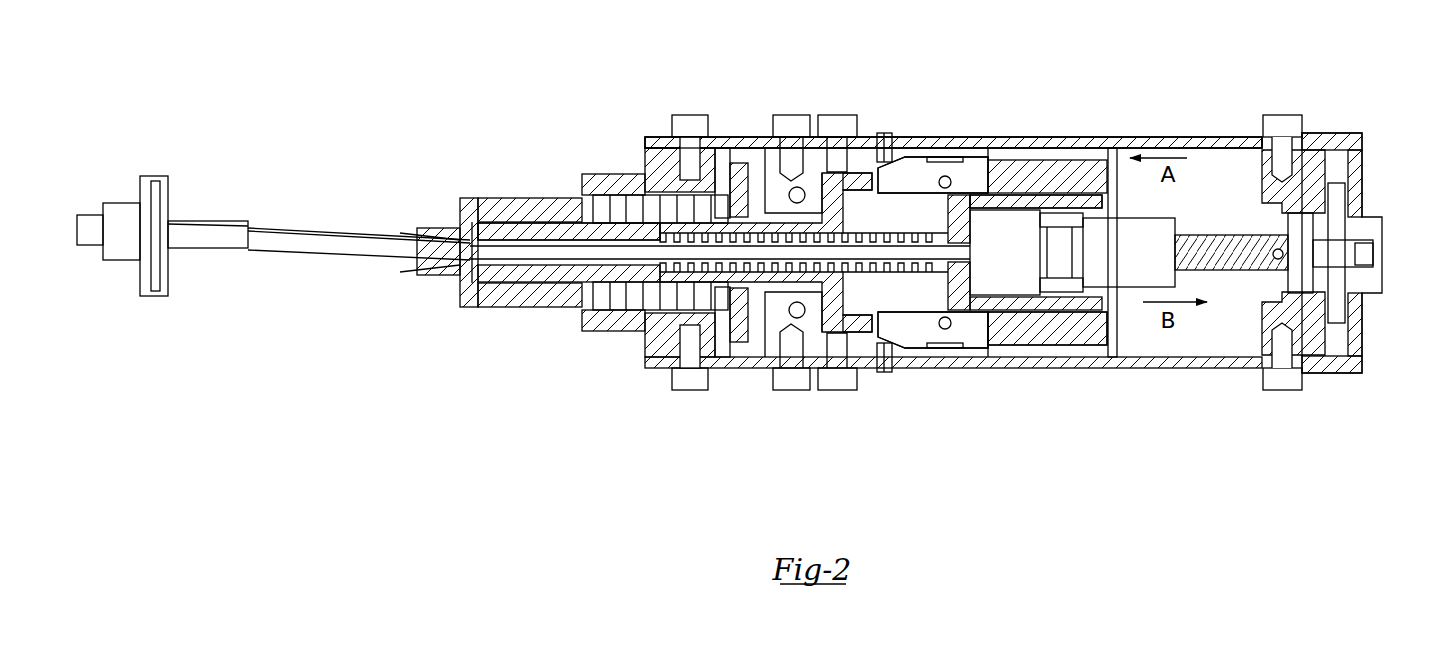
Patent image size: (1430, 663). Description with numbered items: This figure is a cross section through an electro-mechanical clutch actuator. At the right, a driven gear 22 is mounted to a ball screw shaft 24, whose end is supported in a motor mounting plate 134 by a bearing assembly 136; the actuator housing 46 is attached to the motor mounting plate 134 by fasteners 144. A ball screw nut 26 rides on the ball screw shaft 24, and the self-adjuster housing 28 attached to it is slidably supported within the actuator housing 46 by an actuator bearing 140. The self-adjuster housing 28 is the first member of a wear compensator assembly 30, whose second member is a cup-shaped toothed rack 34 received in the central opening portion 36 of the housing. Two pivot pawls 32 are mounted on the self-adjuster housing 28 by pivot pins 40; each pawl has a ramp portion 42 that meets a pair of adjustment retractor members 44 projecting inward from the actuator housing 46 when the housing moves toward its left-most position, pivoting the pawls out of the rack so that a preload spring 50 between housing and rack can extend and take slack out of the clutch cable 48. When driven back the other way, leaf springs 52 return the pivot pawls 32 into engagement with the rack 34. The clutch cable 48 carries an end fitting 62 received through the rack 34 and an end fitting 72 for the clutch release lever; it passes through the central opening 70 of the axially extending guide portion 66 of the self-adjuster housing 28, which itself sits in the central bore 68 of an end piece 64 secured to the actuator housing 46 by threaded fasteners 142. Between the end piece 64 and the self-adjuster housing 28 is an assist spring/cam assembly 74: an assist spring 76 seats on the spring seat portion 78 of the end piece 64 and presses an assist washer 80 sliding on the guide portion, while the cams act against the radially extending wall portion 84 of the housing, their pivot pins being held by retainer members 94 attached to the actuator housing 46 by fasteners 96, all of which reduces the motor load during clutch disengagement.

The driven gear 22 is at (1338, 303).
The ball screw shaft 24 is at (1230, 262).
The ball screw nut 26 is at (1165, 228).
The self-adjuster housing 28 is at (1082, 345).
The wear compensator assembly 30 is at (1015, 125).
The pivot pawls 32 is at (915, 160).
The rack 34 is at (1048, 205).
The central opening portion 36 is at (885, 272).
The pivot pins 40 is at (945, 176).
The ramp portion 42 is at (898, 165).
The adjustment retractor members 44 is at (884, 140).
The actuator housing 46 is at (1167, 137).
The clutch cable 48 is at (310, 233).
The preload spring 50 is at (765, 268).
The leaf springs 52 is at (990, 165).
The end fitting 62 is at (1060, 265).
The end piece 64 is at (577, 300).
The axially extending guide portion 66 is at (505, 273).
The central bore 68 is at (548, 228).
The central opening 70 is at (517, 248).
The end fitting 72 is at (157, 200).
The assist spring/cam assembly 74 is at (733, 395).
The assist spring 76 is at (627, 205).
The spring seat portion 78 is at (620, 330).
The assist washer 80 is at (740, 180).
The radially extending wall portion 84 is at (830, 330).
The retainer members 94 is at (805, 137).
The fasteners 96 is at (787, 122).
The motor mounting plate 134 is at (1313, 160).
The bearing assembly 136 is at (1300, 228).
The actuator bearing 140 is at (1103, 363).
The threaded fasteners 142 is at (688, 125).
The fasteners 144 is at (1275, 125).